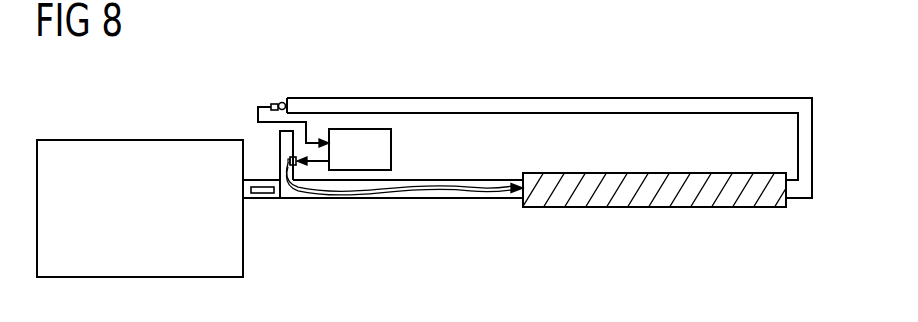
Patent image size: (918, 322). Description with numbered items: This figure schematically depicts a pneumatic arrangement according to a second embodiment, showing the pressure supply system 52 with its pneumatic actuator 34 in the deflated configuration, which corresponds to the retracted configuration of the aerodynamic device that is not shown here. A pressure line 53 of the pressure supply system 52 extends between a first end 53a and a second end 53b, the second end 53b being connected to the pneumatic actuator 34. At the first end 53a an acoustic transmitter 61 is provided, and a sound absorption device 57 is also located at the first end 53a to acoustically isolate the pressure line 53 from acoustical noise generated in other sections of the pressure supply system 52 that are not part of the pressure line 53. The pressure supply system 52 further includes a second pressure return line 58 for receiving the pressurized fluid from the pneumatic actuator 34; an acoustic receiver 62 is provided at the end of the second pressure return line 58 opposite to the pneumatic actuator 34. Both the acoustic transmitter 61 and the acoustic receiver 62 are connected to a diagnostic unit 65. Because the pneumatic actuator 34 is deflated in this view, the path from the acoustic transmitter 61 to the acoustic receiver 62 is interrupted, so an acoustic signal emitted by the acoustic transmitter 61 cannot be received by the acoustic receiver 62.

The pressure supply system 52 is at (138, 139).
The sound absorption device 57 is at (262, 200).
The acoustic receiver 62 is at (281, 101).
The diagnostic unit 65 is at (360, 128).
The acoustic transmitter 61 is at (296, 166).
The second pressure return line 58 is at (563, 97).
The pressure line 53 is at (393, 200).
The first end 53a is at (291, 200).
The second end 53b is at (518, 207).
The pneumatic actuator 34 is at (671, 208).